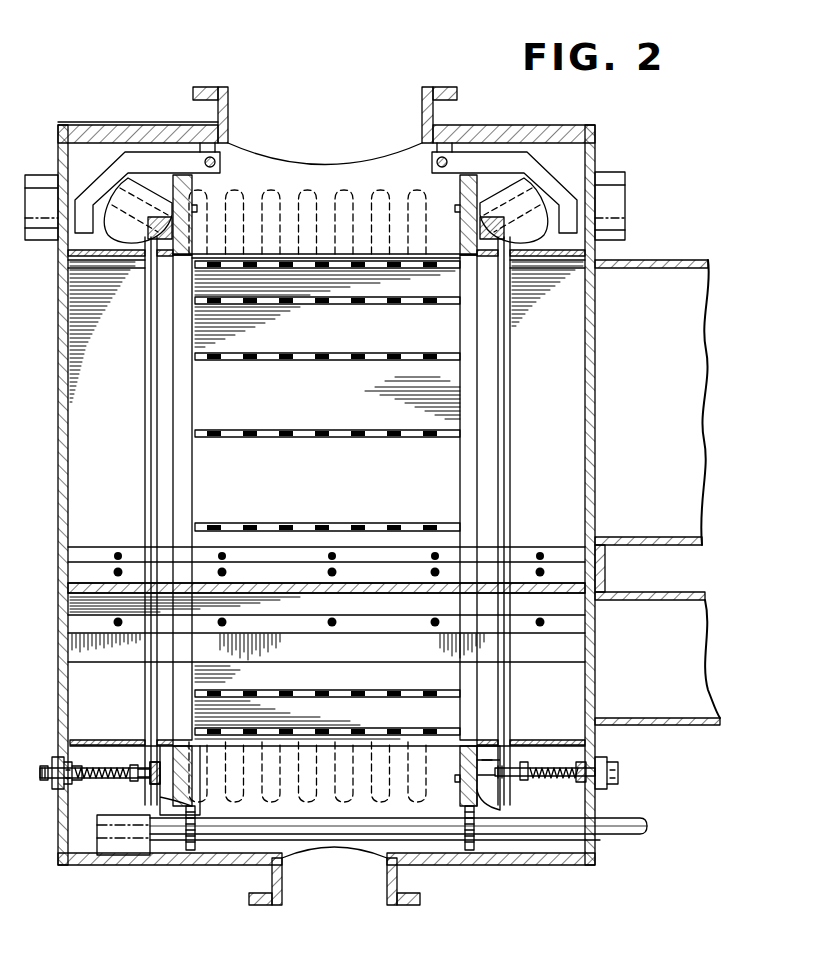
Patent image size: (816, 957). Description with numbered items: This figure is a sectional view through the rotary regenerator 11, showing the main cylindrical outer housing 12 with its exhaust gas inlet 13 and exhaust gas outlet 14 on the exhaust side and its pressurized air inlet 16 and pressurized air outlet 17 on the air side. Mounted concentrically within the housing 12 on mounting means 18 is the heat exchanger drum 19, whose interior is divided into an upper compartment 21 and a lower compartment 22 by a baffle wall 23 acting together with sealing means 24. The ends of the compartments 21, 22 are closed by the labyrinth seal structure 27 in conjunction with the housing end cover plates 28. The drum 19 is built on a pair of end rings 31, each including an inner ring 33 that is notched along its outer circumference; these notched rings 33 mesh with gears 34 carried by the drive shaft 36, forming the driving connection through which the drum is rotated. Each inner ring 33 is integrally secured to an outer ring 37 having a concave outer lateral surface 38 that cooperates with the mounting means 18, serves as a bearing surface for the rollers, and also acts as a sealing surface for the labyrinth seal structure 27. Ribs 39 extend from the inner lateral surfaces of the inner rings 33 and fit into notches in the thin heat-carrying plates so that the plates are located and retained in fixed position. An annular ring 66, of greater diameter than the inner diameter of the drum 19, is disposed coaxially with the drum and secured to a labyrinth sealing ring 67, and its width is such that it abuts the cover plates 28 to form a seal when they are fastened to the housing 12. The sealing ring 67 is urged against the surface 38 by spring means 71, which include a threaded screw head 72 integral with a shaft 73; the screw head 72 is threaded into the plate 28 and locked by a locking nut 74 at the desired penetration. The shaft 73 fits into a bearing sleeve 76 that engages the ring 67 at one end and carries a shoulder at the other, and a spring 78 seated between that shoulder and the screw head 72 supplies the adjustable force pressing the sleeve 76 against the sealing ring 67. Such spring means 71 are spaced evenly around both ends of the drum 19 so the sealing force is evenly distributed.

The rotary regenerator 11 is at (198, 62).
The main cylindrical outer housing 12 is at (118, 872).
The exhaust gas inlet 13 is at (654, 313).
The exhaust gas outlet 14 is at (338, 115).
The pressurized air inlet 16 is at (337, 896).
The pressurized air outlet 17 is at (654, 705).
The mounting means 18 is at (118, 170).
The heat exchanger drum 19 is at (212, 400).
The upper compartment 21 is at (321, 404).
The lower compartment 22 is at (335, 721).
The baffle wall 23 is at (258, 592).
The sealing means 24 is at (100, 612).
The labyrinth seal structure 27 is at (285, 264).
The housing end cover plate 28 is at (66, 388).
The end ring 31 is at (484, 738).
The inner ring 33 is at (462, 752).
The gear 34 is at (197, 812).
The drive shaft 36 is at (538, 825).
The outer ring 37 is at (497, 798).
The concave outer lateral surface 38 is at (170, 797).
The rib 39 is at (458, 778).
The annular ring 66 is at (60, 258).
The labyrinth sealing ring 67 is at (327, 490).
The spring means 71 is at (52, 757).
The threaded screw head 72 is at (42, 782).
The shaft 73 is at (90, 779).
The locking nut 74 is at (58, 790).
The bearing sleeve 76 is at (148, 765).
The spring 78 is at (113, 767).